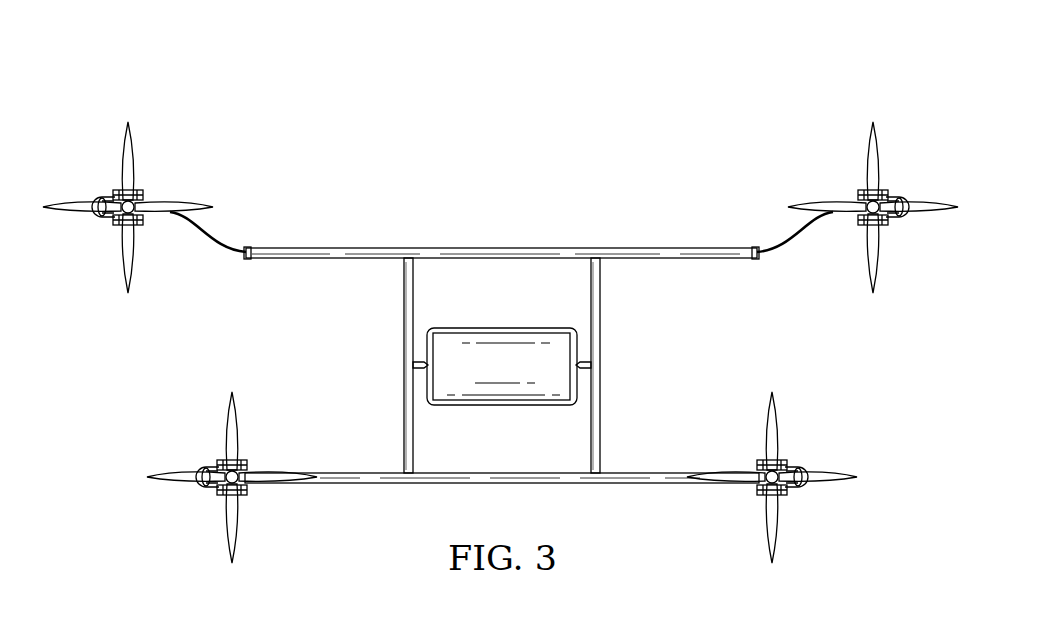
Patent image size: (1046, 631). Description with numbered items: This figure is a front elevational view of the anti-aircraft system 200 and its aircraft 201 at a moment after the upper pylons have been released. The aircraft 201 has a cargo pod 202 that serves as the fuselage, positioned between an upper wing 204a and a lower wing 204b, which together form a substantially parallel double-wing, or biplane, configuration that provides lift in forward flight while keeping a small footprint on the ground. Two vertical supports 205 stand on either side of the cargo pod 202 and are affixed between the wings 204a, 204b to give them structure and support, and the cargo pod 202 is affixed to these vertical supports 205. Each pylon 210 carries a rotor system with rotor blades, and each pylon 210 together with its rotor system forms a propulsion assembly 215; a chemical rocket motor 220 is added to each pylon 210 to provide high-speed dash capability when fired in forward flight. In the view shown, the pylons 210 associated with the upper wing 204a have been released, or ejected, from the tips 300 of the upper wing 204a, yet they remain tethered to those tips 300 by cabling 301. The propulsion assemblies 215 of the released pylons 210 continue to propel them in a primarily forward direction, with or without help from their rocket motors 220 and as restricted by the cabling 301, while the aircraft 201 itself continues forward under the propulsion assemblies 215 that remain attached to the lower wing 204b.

The anti-aircraft system 200 is at (676, 62).
The aircraft 201 is at (514, 211).
The cargo pod 202 is at (503, 328).
The upper wing 204a is at (347, 247).
The lower wing 204b is at (370, 484).
The vertical supports 205 is at (403, 327).
The pylon 210 is at (141, 190).
The propulsion assembly 215 is at (105, 127).
The chemical rocket motor 220 is at (107, 197).
The tip 300 is at (243, 259).
The cabling 301 is at (207, 245).